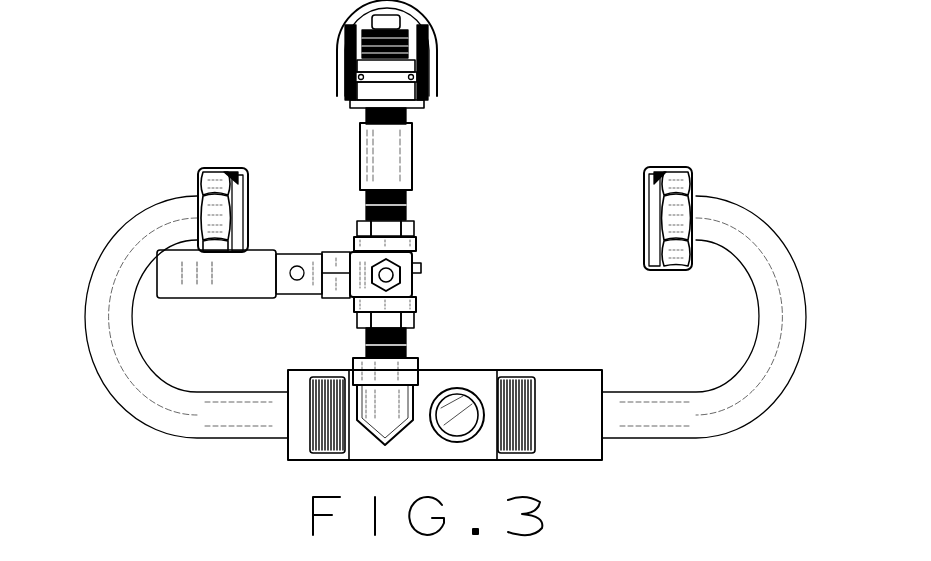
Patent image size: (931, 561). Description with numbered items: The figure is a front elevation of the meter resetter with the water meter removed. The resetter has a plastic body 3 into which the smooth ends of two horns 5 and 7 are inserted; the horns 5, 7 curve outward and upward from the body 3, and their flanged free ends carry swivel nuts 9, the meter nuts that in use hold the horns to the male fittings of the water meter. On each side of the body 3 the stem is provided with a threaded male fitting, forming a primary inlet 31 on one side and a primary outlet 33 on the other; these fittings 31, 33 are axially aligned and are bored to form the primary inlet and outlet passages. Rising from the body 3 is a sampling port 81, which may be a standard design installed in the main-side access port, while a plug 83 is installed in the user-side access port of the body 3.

The plastic body 3 is at (456, 370).
The horn 5 is at (85, 316).
The horn 7 is at (767, 225).
The swivel nut 9 is at (212, 176).
The primary inlet 31 is at (310, 423).
The primary outlet 33 is at (518, 377).
The sampling port 81 is at (448, 130).
The plug 83 is at (457, 419).